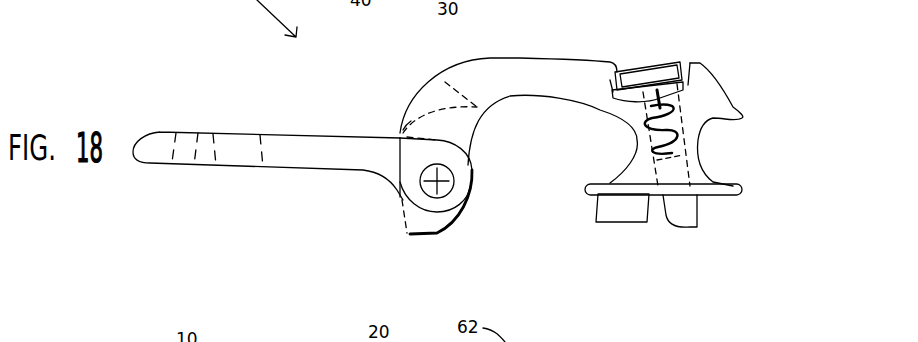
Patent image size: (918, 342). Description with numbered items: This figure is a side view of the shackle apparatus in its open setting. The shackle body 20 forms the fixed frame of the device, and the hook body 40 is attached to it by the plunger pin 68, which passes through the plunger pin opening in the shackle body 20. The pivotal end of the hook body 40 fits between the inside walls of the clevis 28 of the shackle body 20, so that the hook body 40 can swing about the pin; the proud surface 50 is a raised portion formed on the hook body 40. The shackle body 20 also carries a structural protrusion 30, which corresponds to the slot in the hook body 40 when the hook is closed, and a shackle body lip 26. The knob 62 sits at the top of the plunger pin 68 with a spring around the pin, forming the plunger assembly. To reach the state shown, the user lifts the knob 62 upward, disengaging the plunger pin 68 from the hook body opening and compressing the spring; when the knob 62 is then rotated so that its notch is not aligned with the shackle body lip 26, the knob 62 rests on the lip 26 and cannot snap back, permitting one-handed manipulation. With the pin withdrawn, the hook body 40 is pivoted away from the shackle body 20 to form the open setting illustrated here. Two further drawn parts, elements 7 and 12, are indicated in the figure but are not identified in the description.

The post 7 is at (687, 229).
The arm lobe 12 is at (673, 97).
The shackle body 20 is at (535, 77).
The shackle body lip 26 is at (615, 62).
The inside wall clevis 28 is at (470, 170).
The structural protrusion 30 is at (618, 223).
The hook body 40 is at (312, 138).
The proud surface 50 is at (400, 197).
The knob 62 is at (667, 62).
The plunger pin 68 is at (700, 218).